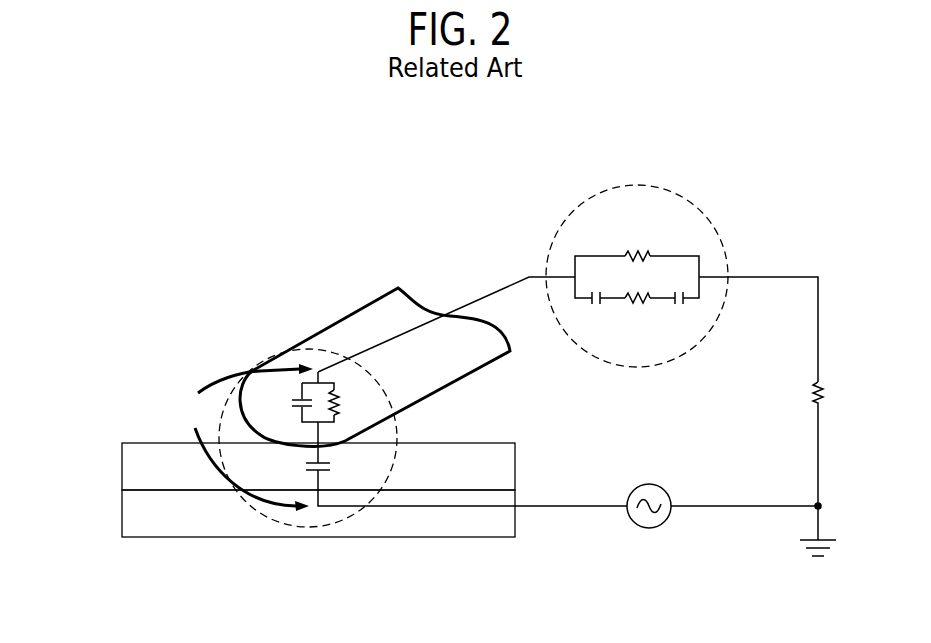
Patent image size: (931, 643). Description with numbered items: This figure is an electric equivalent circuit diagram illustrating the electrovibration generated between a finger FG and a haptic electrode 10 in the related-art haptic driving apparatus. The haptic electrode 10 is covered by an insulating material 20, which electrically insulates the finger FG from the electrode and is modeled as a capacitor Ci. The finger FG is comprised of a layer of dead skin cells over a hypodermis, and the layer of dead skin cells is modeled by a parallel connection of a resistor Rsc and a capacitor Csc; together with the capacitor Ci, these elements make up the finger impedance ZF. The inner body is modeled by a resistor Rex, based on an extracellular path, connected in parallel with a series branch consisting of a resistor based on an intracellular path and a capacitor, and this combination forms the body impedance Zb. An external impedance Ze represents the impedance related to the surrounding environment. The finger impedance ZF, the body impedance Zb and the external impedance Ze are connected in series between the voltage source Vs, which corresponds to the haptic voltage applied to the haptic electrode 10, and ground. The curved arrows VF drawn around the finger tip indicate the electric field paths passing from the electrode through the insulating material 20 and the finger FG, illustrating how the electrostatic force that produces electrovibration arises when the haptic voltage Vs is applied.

The haptic electrode 10 is at (130, 515).
The insulating material 20 is at (130, 468).
The finger FG is at (470, 365).
The electric field lines VF is at (248, 437).
The finger impedance ZF is at (262, 515).
The capacitor Csc is at (283, 404).
The resistor Rsc is at (354, 403).
The capacitor Ci is at (307, 464).
The body impedance Zb is at (682, 279).
The resistor Rex is at (638, 241).
The external impedance Ze is at (834, 443).
The haptic voltage Vs is at (722, 491).